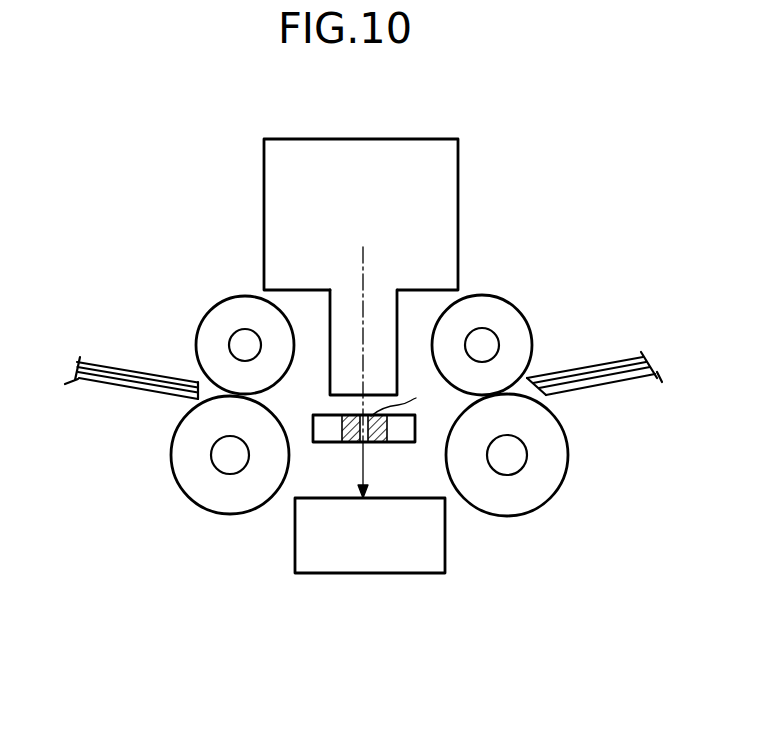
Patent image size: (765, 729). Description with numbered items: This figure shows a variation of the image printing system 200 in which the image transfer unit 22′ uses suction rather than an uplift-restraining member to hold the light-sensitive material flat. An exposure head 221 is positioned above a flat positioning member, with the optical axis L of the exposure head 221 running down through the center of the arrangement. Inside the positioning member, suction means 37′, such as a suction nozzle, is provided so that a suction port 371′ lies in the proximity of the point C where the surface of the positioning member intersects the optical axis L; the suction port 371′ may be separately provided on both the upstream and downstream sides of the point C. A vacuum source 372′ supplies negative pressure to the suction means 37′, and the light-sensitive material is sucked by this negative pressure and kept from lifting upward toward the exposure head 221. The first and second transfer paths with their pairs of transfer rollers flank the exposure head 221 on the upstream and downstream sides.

The image printing system 200 is at (383, 96).
The image transfer unit 22′ is at (408, 241).
The exposure head 221 is at (445, 208).
The optical axis L is at (365, 250).
The suction means 37′ is at (423, 487).
The suction port 371′ is at (367, 415).
The vacuum source 372′ is at (447, 553).
The point of intersection C is at (405, 398).